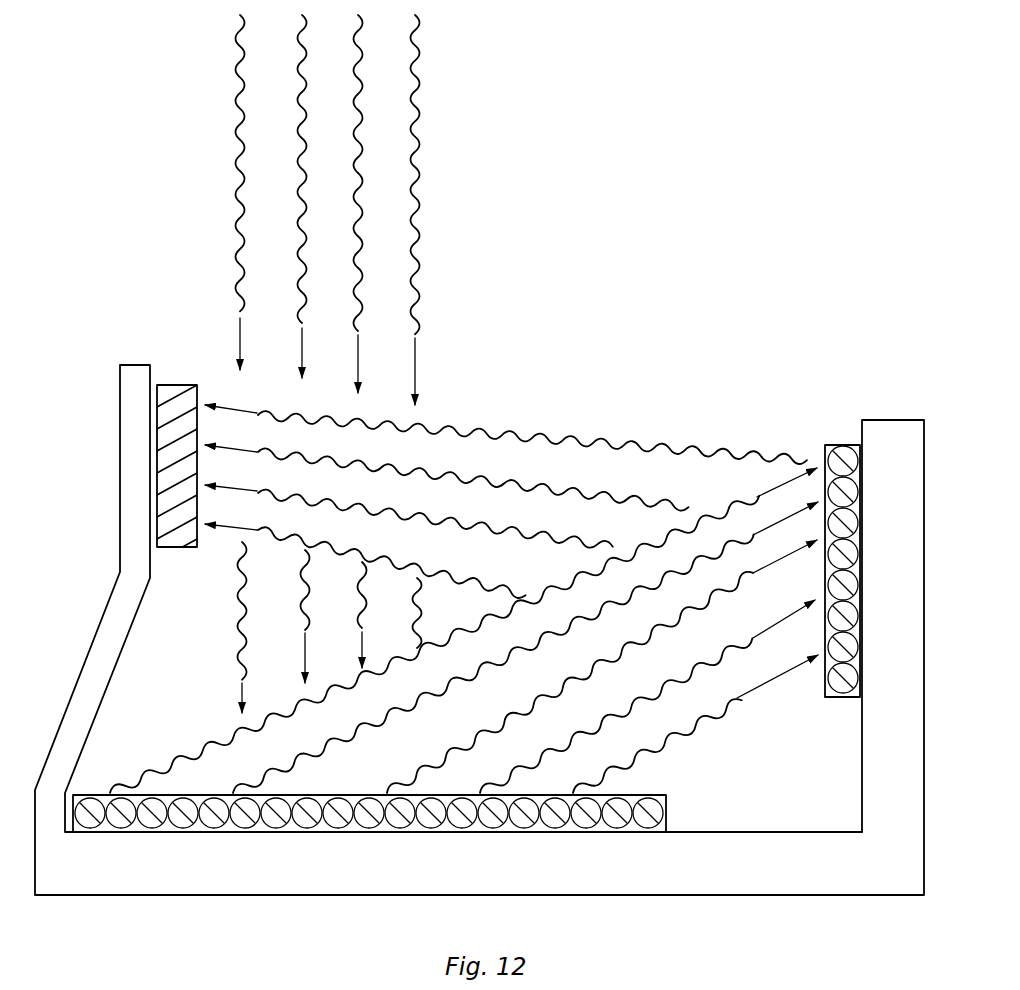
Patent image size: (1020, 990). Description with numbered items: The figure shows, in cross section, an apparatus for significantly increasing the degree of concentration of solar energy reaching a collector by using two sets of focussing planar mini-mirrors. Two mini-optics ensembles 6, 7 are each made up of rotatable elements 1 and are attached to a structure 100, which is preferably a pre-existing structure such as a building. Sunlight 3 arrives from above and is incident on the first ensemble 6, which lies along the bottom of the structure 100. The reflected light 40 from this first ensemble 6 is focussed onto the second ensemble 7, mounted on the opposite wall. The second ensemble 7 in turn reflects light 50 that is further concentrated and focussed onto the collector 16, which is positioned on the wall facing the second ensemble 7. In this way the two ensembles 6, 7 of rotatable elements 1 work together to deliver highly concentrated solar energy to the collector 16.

The rotatable elements 1 is at (724, 817).
The sunlight 3 is at (302, 136).
The first mini-optics ensemble 6 is at (212, 790).
The second mini-optics ensemble 7 is at (765, 760).
The collector 16 is at (172, 385).
The reflected light 40 is at (472, 745).
The light 50 is at (504, 487).
The structure 100 is at (206, 872).